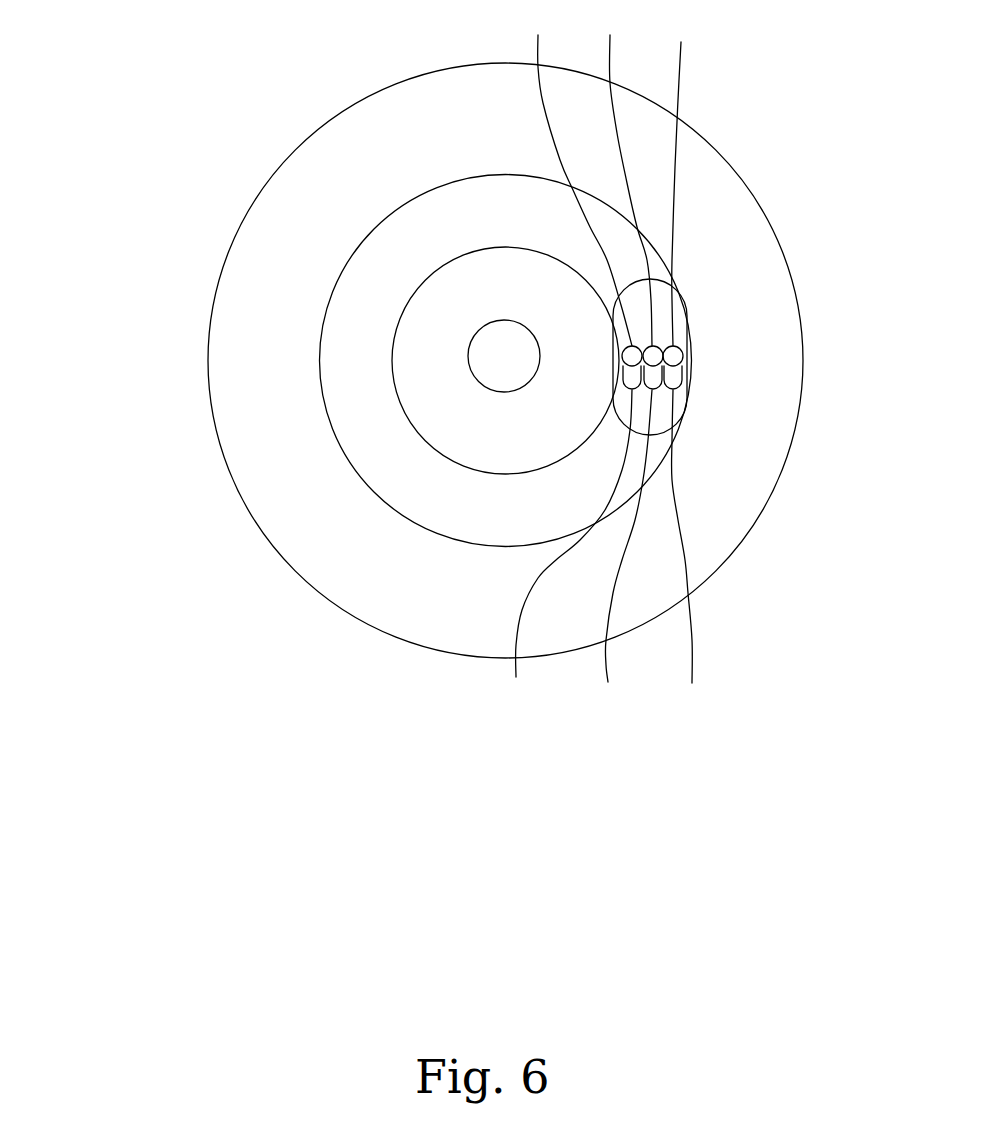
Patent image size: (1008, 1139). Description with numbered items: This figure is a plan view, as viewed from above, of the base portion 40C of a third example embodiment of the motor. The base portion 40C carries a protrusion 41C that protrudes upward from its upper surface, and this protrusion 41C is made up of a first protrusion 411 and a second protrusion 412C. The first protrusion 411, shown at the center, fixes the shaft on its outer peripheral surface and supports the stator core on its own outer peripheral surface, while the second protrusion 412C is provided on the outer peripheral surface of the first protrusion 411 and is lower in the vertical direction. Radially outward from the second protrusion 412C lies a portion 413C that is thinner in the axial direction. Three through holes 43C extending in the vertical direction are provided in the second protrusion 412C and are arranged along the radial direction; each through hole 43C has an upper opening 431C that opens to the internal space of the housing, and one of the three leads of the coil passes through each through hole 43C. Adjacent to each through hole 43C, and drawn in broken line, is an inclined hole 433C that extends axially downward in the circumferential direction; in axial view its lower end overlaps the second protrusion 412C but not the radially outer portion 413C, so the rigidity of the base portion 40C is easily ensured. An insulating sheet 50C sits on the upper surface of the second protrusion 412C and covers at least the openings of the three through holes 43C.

The base portion 40C is at (213, 268).
The portion located radially outward from the second protrusion 413C is at (237, 350).
The second protrusion 412C is at (333, 352).
The first protrusion 411 is at (422, 373).
The protrusion 41C is at (337, 403).
The insulating sheet 50C is at (680, 330).
The through hole 43C is at (600, 376).
The inclined hole 433C is at (600, 392).
The upper opening 431C is at (600, 392).